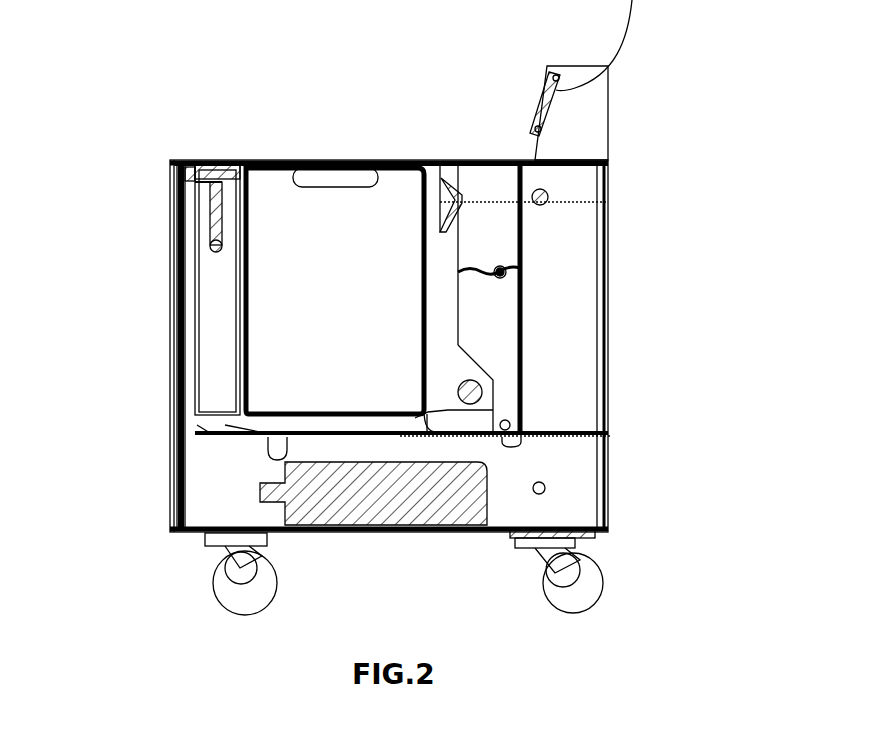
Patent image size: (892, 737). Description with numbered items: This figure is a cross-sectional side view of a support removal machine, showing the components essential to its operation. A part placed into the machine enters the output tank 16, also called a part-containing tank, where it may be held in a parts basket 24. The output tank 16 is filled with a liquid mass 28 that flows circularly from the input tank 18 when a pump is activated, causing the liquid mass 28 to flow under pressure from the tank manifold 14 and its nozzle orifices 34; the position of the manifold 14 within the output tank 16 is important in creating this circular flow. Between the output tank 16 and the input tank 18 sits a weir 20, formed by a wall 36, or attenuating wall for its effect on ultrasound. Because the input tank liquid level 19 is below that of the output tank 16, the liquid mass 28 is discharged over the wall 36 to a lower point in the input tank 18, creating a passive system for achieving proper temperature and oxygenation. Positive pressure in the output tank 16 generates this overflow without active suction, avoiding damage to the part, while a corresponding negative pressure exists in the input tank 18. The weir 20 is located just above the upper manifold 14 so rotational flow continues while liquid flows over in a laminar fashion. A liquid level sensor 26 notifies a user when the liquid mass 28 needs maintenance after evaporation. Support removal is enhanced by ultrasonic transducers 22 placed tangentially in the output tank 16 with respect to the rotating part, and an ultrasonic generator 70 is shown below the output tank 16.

The tank manifold 14 is at (455, 215).
The output tank 16 is at (460, 343).
The input tank 18 is at (525, 232).
The input tank liquid level 19 is at (526, 268).
The weir 20 is at (442, 157).
The ultrasonic transducers 22 is at (195, 297).
The parts basket 24 is at (200, 160).
The liquid level sensor 26 is at (525, 277).
The liquid mass 28 is at (318, 276).
The nozzle orifices 34 is at (260, 429).
The wall 36 is at (517, 322).
The ultrasonic generator 70 is at (283, 485).